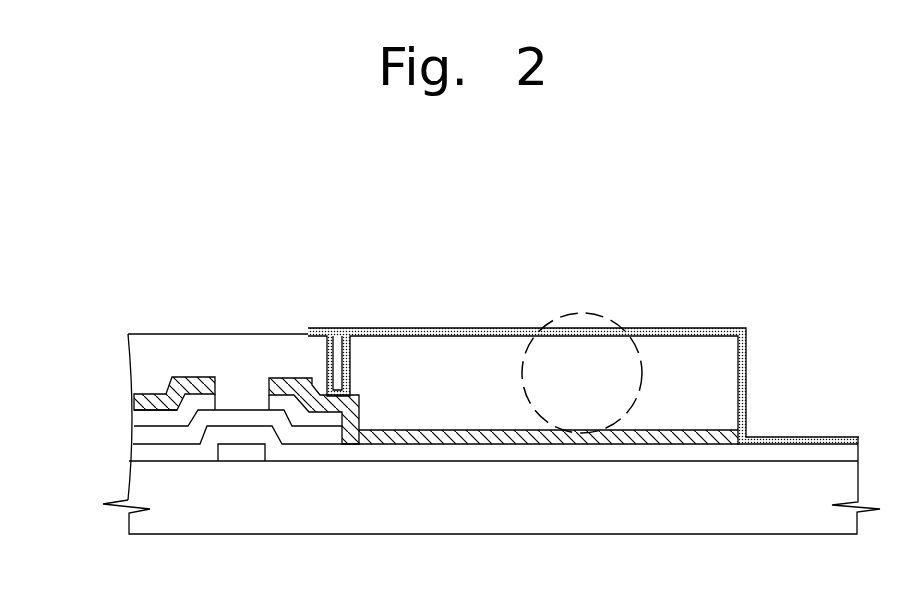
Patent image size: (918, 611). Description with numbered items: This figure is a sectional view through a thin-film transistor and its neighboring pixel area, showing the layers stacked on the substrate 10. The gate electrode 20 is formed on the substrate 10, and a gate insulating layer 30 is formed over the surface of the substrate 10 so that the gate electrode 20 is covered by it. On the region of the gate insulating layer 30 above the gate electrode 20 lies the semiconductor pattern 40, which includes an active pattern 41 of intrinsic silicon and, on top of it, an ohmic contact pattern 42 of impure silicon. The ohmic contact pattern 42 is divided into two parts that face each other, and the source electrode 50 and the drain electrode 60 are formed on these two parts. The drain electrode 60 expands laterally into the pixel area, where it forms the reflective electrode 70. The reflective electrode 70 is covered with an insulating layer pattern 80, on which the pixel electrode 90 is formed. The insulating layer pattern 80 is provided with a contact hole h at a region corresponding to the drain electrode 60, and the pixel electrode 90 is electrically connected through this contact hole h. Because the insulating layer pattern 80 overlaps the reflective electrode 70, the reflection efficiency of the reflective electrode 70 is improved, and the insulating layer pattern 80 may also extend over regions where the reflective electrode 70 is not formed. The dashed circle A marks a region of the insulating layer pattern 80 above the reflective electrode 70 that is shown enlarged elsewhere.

The substrate 10 is at (145, 523).
The gate electrode 20 is at (238, 457).
The gate insulating layer 30 is at (140, 455).
The semiconductor pattern 40 is at (176, 370).
The active pattern 41 is at (145, 437).
The ohmic contact pattern 42 is at (145, 420).
The source electrode 50 is at (197, 380).
The drain electrode 60 is at (300, 378).
The reflective electrode 70 is at (482, 433).
The insulating layer pattern 80 is at (147, 366).
The pixel electrode 90 is at (433, 330).
The contact hole h is at (333, 342).
The region A is at (582, 313).